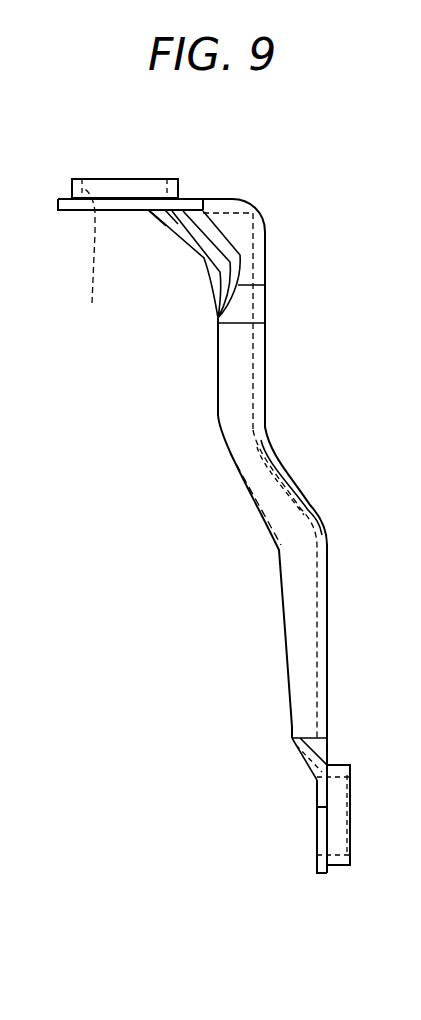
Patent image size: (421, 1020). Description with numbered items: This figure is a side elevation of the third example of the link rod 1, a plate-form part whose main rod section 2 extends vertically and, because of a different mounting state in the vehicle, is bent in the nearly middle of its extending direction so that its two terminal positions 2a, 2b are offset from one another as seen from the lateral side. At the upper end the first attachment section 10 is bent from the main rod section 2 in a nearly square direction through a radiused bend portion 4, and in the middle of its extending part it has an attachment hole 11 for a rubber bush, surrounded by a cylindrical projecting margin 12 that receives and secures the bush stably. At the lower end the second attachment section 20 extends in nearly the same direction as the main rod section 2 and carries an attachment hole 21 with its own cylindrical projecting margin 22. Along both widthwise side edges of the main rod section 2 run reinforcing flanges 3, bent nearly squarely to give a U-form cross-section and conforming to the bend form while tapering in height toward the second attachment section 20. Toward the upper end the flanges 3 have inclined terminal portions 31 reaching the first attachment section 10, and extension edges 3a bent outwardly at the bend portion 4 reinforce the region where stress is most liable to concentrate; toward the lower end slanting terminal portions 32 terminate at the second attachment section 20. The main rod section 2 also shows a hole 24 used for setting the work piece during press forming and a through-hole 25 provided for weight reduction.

The link rod 1 is at (247, 137).
The main rod section 2 is at (325, 523).
The terminal position 2a is at (265, 331).
The terminal position 2b is at (327, 688).
The reinforcing flange 3 is at (232, 433).
The extension edge 3a is at (217, 233).
The bend portion 4 is at (258, 215).
The first attachment section 10 is at (75, 210).
The attachment hole 11 is at (99, 264).
The cylindrical projecting margin 12 is at (123, 183).
The second attachment section 20 is at (318, 867).
The attachment hole 21 is at (343, 840).
The cylindrical projecting margin 22 is at (340, 803).
The hole 24 is at (262, 378).
The through-hole 25 is at (328, 642).
The terminal portion 31 is at (173, 217).
The terminal portion 32 is at (303, 760).